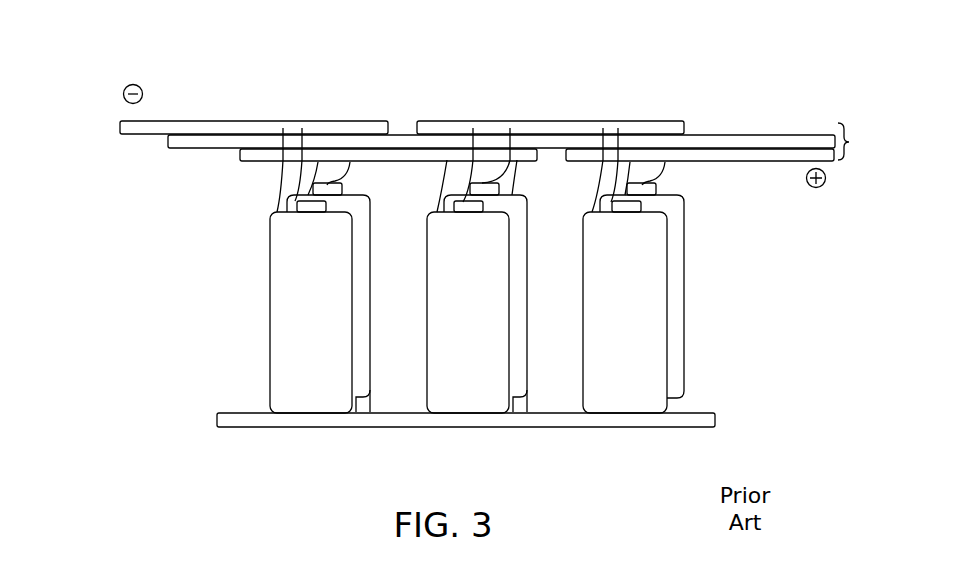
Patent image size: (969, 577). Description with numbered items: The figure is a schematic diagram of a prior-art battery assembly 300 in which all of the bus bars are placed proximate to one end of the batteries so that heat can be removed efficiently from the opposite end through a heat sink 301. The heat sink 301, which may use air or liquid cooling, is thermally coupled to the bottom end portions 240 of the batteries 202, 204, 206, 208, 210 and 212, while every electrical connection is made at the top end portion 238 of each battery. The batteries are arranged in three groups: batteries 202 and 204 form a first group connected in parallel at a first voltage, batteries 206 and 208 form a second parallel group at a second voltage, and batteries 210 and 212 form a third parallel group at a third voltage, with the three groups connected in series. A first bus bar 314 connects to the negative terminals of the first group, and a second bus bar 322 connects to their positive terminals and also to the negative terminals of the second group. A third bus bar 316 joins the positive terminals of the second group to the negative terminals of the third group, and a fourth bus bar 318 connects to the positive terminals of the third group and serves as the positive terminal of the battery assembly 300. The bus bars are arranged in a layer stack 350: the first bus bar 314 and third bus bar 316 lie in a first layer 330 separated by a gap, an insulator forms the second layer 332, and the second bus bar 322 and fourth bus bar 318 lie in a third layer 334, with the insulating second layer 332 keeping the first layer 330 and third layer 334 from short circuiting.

The battery assembly 300 is at (150, 40).
The first bus bar 314 is at (205, 120).
The third bus bar 316 is at (497, 121).
The fourth bus bar 318 is at (772, 161).
The second bus bar 322 is at (412, 162).
The first layer 330 is at (118, 128).
The second layer 332 is at (166, 141).
The third layer 334 is at (238, 154).
The layer stack 350 is at (863, 141).
The battery 202 is at (270, 328).
The battery 204 is at (365, 398).
The battery 206 is at (450, 398).
The battery 208 is at (518, 400).
The battery 210 is at (667, 312).
The battery 212 is at (684, 253).
The top end portion 238 is at (332, 247).
The bottom end portion 240 is at (332, 396).
The heat sink 301 is at (243, 427).